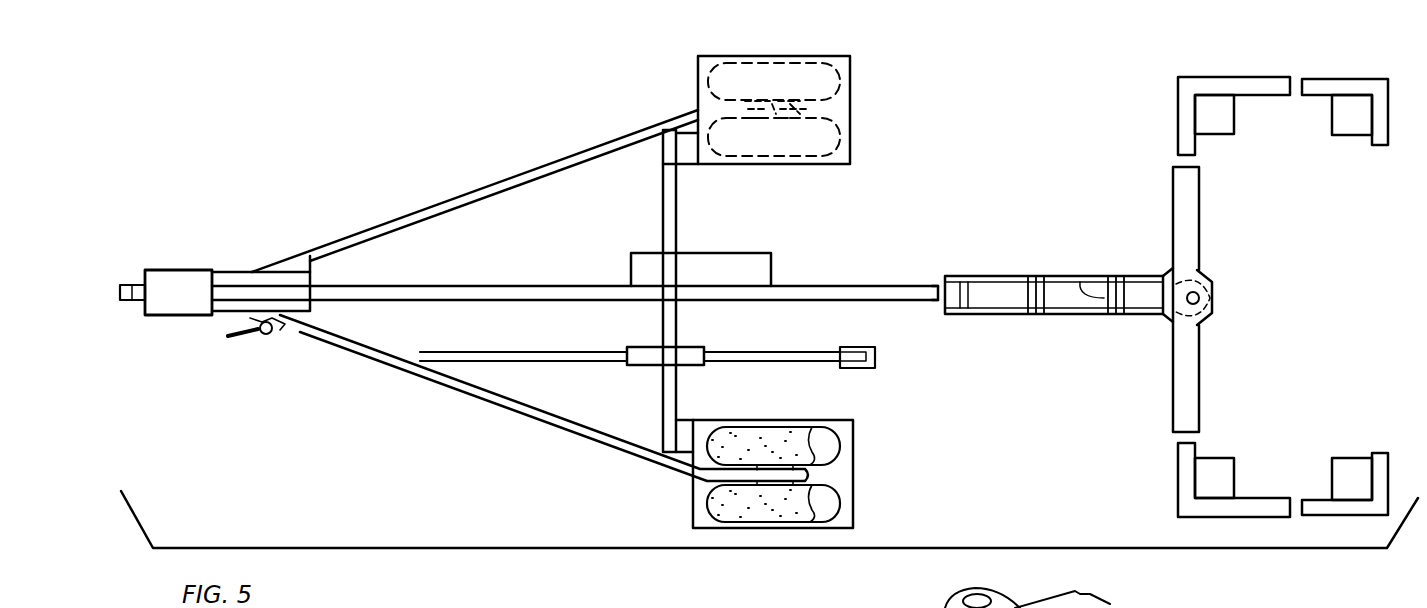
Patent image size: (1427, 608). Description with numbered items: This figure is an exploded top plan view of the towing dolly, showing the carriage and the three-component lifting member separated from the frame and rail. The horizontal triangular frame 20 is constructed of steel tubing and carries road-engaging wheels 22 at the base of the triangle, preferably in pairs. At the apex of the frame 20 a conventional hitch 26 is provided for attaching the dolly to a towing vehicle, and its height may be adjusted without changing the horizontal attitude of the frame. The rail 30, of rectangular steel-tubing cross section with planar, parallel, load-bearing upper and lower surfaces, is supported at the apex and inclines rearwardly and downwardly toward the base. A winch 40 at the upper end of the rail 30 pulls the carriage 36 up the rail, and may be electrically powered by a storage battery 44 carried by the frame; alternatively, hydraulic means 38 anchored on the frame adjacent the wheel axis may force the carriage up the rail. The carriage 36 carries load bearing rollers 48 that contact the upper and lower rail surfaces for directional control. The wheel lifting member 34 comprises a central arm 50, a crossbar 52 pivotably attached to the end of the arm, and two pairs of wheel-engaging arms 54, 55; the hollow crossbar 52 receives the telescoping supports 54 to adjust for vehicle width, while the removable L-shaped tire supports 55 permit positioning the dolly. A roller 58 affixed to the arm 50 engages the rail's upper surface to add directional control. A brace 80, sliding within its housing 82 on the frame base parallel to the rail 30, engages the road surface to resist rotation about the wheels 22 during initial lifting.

The horizontal triangular frame 20 is at (552, 172).
The road-engaging wheels 22 is at (838, 80).
The hitch 26 is at (127, 283).
The rail 30 is at (906, 276).
The wheel lifting member 34 is at (1160, 270).
The carriage 36 is at (1007, 276).
The hydraulic means 38 is at (779, 253).
The winch 40 is at (205, 270).
The storage battery 44 is at (283, 275).
The load bearing rollers 48 is at (1028, 315).
The central arm 50 is at (1142, 315).
The crossbar 52 is at (1200, 228).
The wheel-engaging arms 54 is at (1266, 95).
The L-shaped tire support 55 is at (1380, 146).
The roller 58 is at (1104, 298).
The brace 80 is at (824, 368).
The housing 82 is at (651, 366).